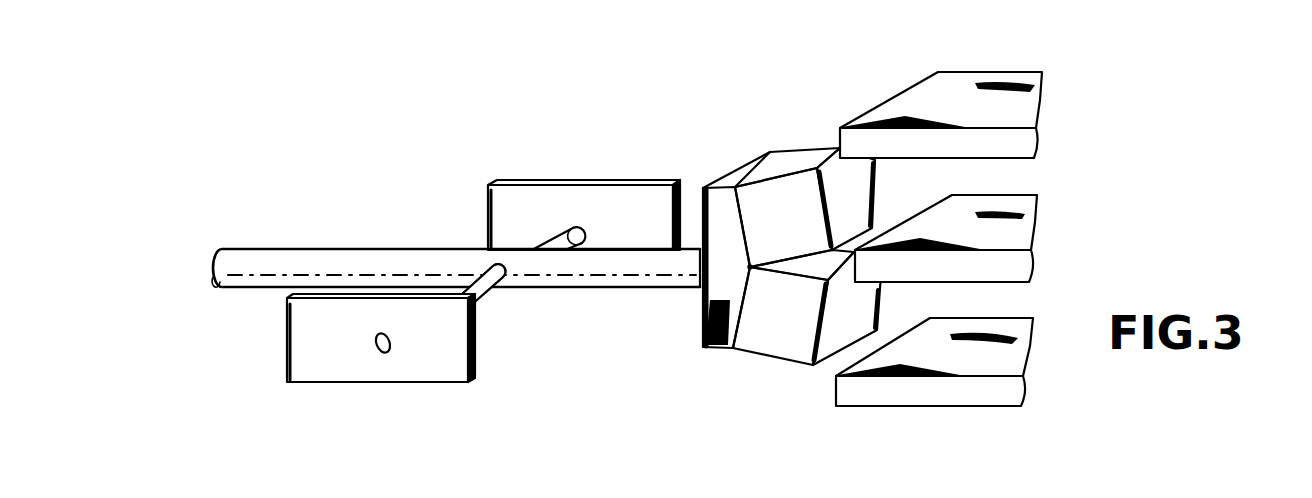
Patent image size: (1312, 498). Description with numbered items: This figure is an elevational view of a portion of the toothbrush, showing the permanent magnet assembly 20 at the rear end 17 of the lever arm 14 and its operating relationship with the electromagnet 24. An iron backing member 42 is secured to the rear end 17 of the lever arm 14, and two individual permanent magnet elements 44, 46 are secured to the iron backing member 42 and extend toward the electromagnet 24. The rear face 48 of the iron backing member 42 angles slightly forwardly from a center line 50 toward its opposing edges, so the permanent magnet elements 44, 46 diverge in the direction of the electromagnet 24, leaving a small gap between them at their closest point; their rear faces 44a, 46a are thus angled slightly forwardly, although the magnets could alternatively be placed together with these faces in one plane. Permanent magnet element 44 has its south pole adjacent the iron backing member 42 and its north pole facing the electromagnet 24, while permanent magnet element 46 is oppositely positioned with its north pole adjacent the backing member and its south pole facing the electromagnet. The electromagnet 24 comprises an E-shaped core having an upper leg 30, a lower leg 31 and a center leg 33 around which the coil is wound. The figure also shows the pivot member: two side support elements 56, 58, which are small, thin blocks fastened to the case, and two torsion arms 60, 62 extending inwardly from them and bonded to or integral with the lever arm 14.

The lever arm 14 is at (615, 286).
The rear end 17 is at (693, 289).
The permanent magnet assembly 20 is at (753, 128).
The electromagnet 24 is at (1030, 65).
The upper leg 30 is at (893, 100).
The lower leg 31 is at (910, 395).
The center leg 33 is at (896, 262).
The iron backing member 42 is at (710, 185).
The permanent magnet element 44 is at (800, 150).
The rear face 44a is at (878, 193).
The permanent magnet element 46 is at (787, 347).
The rear face 46a is at (883, 305).
The rear face 48 is at (742, 297).
The center line 50 is at (752, 265).
The side support element 56 is at (530, 196).
The side support element 58 is at (460, 373).
The torsion arm 60 is at (578, 226).
The torsion arm 62 is at (497, 295).